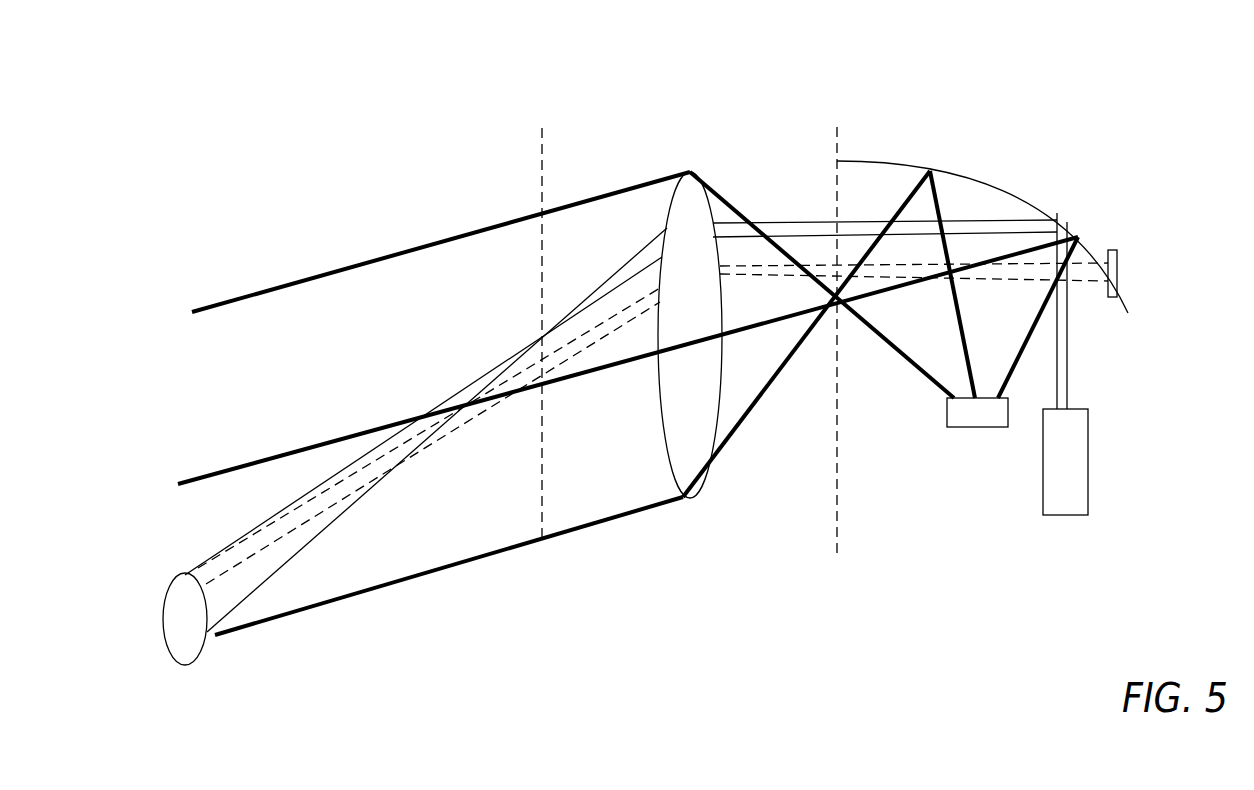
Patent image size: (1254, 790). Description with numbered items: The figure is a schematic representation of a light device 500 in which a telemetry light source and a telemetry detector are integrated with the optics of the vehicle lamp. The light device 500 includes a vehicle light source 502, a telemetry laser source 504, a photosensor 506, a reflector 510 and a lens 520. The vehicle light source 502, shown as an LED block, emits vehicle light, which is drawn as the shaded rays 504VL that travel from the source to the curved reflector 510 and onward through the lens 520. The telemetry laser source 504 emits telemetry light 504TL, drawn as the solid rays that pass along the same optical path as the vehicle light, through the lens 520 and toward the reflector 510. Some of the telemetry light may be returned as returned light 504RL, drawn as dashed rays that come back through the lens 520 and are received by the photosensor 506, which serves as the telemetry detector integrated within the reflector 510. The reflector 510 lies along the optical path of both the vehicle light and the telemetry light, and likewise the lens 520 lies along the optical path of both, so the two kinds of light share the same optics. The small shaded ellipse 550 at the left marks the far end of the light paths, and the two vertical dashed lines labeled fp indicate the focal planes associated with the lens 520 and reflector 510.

The light device 500 is at (407, 50).
The vehicle light source 502 is at (978, 428).
The telemetry laser source 504 is at (1088, 437).
The illumination light path 504VL is at (322, 277).
The telemetry light 504TL is at (808, 235).
The returned light 504RL is at (738, 271).
The photosensor 506 is at (1115, 250).
The reflector 510 is at (980, 185).
The lens 520 is at (697, 175).
The eye 550 is at (163, 622).
The focal plane fp is at (542, 140).